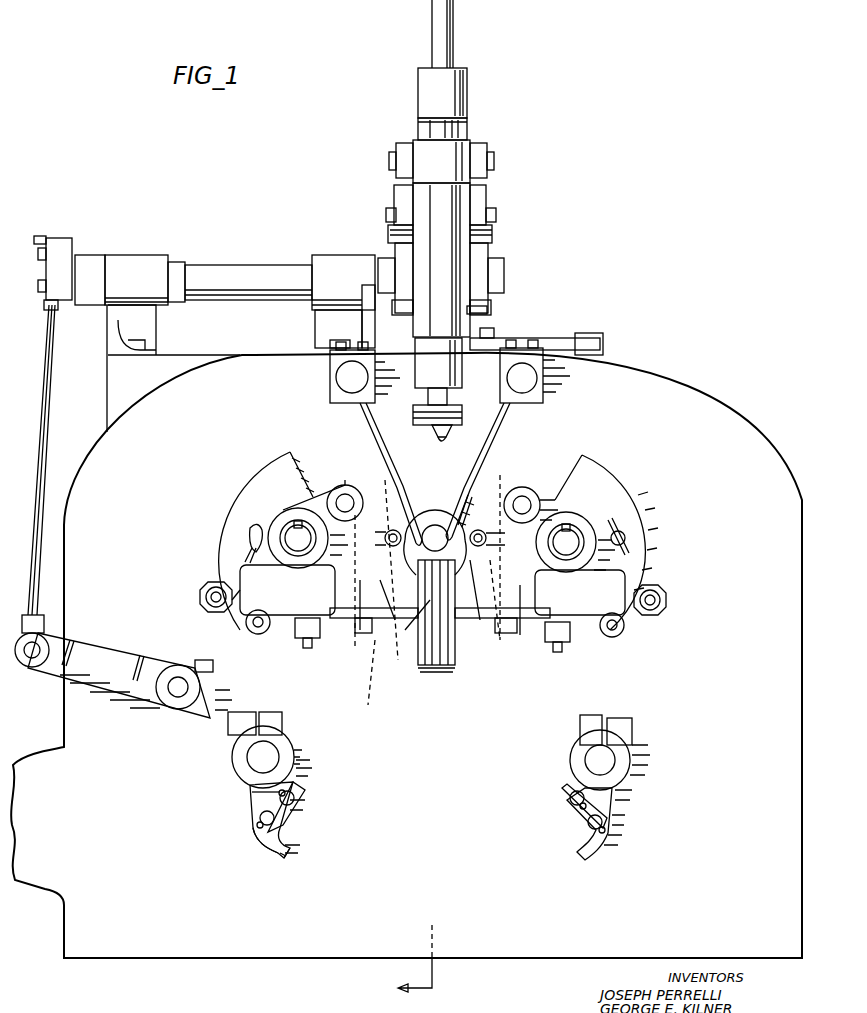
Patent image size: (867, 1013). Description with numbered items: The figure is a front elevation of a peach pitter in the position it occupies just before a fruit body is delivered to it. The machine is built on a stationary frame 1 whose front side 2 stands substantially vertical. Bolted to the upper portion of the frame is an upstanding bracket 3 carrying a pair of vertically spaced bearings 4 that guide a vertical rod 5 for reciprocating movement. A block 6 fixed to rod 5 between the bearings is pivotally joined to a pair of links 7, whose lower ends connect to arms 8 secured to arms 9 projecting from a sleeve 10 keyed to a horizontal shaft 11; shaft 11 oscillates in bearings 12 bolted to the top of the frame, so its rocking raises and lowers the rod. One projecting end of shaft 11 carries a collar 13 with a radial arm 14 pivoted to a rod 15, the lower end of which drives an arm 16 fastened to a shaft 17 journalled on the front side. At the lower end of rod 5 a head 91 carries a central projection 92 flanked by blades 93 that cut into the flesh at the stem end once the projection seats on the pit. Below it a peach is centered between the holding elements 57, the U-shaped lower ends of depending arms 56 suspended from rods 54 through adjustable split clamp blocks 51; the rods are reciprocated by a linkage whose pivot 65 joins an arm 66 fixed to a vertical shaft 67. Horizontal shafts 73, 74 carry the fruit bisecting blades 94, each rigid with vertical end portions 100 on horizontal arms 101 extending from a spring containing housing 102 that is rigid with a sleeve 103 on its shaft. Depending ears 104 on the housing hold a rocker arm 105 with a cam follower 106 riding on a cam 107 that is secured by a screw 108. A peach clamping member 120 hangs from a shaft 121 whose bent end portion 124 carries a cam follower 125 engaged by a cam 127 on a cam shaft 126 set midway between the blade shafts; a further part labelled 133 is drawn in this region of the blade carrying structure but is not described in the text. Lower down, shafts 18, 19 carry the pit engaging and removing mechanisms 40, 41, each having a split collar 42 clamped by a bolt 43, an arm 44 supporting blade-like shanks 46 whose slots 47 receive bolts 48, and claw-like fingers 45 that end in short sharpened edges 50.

The frame 1 is at (682, 368).
The front side 2 is at (456, 533).
The upstanding bracket 3 is at (476, 128).
The bearings 4 is at (418, 102).
The vertical rod 5 is at (447, 43).
The block 6 is at (441, 161).
The links 7 is at (405, 190).
The arms 8 is at (388, 236).
The arms 9 is at (398, 250).
The sleeve 10 is at (487, 312).
The horizontal shaft 11 is at (246, 280).
The bearings 12 is at (147, 257).
The collar 13 is at (90, 258).
The arm 14 is at (65, 238).
The rod 15 is at (44, 406).
The arm 16 is at (120, 655).
The shaft 17 is at (180, 676).
The horizontal shaft 18 is at (250, 760).
The horizontal shaft 19 is at (612, 768).
The pit engaging and removing mechanism 40 is at (242, 833).
The pit engaging and removing mechanism 41 is at (630, 854).
The split collar 42 is at (296, 752).
The bolt 43 is at (228, 742).
The arm 44 is at (250, 800).
The claw-like finger 45 is at (270, 850).
The shank 46 is at (295, 797).
The slots 47 is at (302, 787).
The bolts 48 is at (276, 820).
The sharpened edges 50 is at (286, 860).
The split clamp block 51 is at (332, 402).
The rods 54 is at (336, 380).
The depending arm 56 is at (372, 440).
The peach holding elements 57 is at (466, 492).
The pivotal connection 65 is at (490, 330).
The arm 66 is at (562, 336).
The vertical shaft 67 is at (603, 336).
The shaft 73 is at (308, 538).
The shaft 74 is at (575, 542).
The head 91 is at (462, 410).
The central projection 92 is at (441, 440).
The blades 93 is at (446, 428).
The fruit bisecting blades 94 is at (405, 630).
The end portions 100 is at (418, 660).
The horizontal arms 101 is at (375, 622).
The spring containing housing 102 is at (283, 590).
The sleeve 103 is at (283, 510).
The depending ears 104 is at (248, 630).
The rocker arm 105 is at (288, 640).
The cam follower 106 is at (202, 590).
The cam 107 is at (216, 515).
The screw 108 is at (246, 553).
The peach clamping member 120 is at (360, 640).
The shaft 121 is at (345, 494).
The end portion 124 is at (398, 530).
The cam follower 125 is at (436, 522).
The cam shaft 126 is at (480, 622).
The cam 127 is at (444, 515).
The block 133 is at (490, 597).